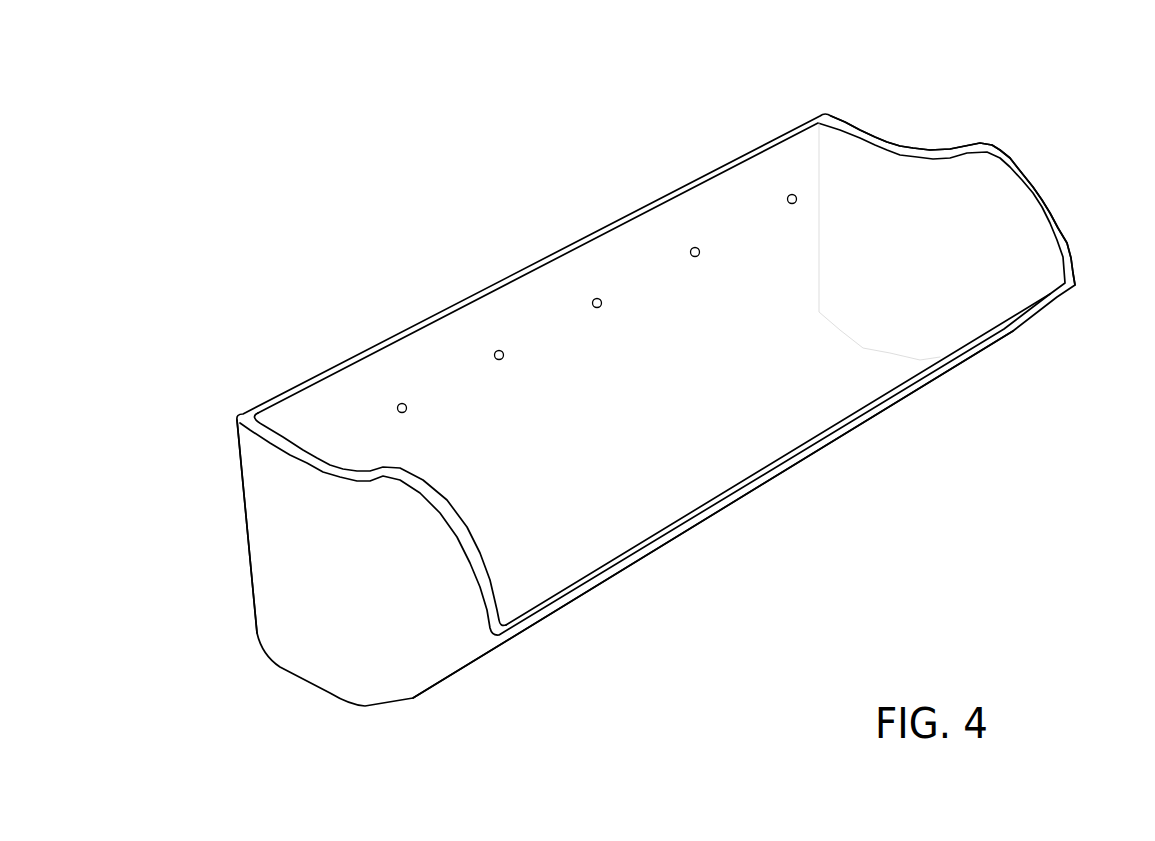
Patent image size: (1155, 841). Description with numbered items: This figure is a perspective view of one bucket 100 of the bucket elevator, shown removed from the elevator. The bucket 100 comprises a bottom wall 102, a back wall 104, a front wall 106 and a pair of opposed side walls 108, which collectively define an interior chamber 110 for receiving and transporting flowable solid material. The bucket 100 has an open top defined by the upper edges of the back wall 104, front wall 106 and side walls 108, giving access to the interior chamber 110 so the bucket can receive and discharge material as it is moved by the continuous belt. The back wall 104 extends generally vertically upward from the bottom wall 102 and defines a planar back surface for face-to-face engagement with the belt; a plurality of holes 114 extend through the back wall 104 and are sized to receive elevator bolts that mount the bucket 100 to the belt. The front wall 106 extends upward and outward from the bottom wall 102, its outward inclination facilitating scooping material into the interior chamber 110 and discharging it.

The bucket 100 is at (1016, 94).
The bottom wall 102 is at (523, 515).
The back wall 104 is at (440, 348).
The front wall 106 is at (713, 512).
The side walls 108 is at (300, 543).
The interior chamber 110 is at (793, 260).
The holes 114 is at (398, 407).